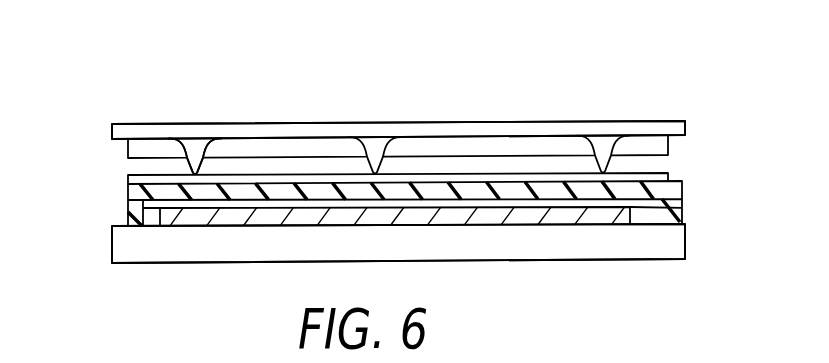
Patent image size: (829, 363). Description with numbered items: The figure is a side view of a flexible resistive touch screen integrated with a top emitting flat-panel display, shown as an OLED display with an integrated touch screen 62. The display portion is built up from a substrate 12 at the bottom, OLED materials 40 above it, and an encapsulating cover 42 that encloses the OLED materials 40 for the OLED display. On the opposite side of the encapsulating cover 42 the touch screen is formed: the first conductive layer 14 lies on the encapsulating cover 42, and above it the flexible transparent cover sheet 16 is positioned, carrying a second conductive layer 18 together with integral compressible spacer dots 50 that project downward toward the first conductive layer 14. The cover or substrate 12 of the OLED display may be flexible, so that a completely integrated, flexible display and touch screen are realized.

The substrate 12 is at (112, 246).
The first conductive layer 14 is at (668, 174).
The flexible transparent cover sheet 16 is at (112, 133).
The second conductive layer 18 is at (668, 148).
The OLED materials 40 is at (682, 209).
The encapsulating cover 42 is at (128, 205).
The integral compressible spacer dots 50 is at (196, 158).
The OLED display with an integrated touch screen 62 is at (543, 93).